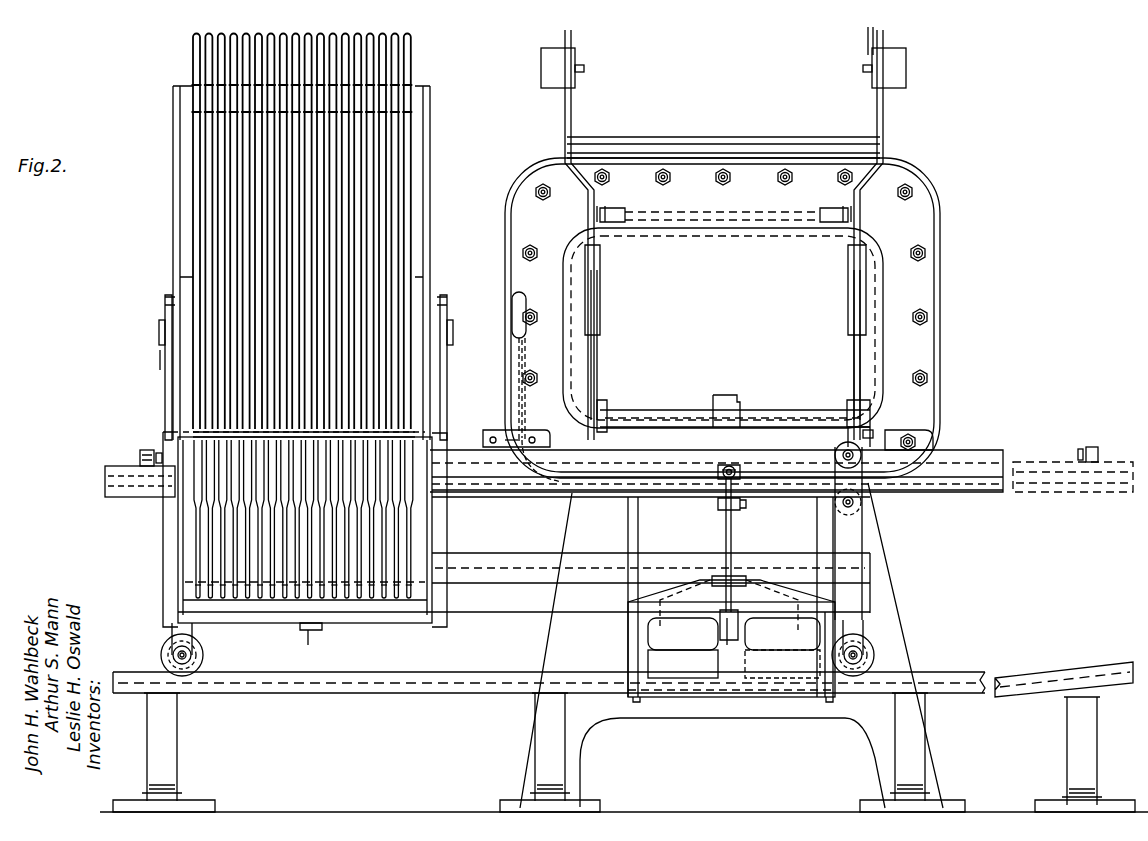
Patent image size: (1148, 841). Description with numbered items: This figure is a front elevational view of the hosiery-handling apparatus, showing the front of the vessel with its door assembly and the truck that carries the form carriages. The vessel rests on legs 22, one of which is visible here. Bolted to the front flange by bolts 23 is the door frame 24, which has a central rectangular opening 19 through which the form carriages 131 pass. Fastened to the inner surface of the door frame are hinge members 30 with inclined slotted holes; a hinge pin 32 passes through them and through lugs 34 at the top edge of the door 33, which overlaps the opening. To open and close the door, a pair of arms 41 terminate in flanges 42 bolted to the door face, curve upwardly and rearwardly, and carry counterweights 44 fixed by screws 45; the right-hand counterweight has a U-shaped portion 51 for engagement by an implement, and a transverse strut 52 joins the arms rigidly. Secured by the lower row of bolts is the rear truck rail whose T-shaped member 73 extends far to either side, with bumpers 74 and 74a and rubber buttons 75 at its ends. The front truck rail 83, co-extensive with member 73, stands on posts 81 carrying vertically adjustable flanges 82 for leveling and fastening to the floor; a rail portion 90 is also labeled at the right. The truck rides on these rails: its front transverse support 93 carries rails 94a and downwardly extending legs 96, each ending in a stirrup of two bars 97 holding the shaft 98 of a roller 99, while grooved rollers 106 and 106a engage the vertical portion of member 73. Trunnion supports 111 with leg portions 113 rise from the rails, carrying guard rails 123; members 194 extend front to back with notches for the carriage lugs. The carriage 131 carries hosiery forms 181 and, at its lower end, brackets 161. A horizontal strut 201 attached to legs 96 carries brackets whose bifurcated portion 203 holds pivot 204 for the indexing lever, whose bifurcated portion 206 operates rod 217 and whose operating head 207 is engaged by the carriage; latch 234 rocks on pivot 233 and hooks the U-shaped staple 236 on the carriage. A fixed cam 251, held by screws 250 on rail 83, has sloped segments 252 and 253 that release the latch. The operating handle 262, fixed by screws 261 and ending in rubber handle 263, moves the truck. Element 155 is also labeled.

The hosiery form 181 is at (194, 50).
The form carriage 131 is at (458, 152).
The bracket 161 is at (436, 542).
The leg 96 is at (170, 540).
The leg portion 113 is at (168, 384).
The clamp 155 is at (162, 306).
The guard rail 123 is at (159, 330).
The trunnion support 111 is at (158, 361).
The rubber handle 263 is at (512, 332).
The operating handle 262 is at (518, 393).
The T-shaped member 73 is at (125, 496).
The bumper 74 is at (141, 450).
The rubber button 75 is at (157, 453).
The bumper 74a is at (1091, 447).
The front transverse support 93 is at (491, 496).
The door frame 24 is at (940, 270).
The rectangular opening 19 is at (717, 247).
The door 33 is at (734, 329).
The bolt 23 is at (730, 183).
The transverse strut 52 is at (688, 137).
The arm 41 is at (574, 103).
The counterweight 44 is at (540, 68).
The screw 45 is at (586, 72).
The U-shaped portion 51 is at (867, 43).
The hinge pin 32 is at (685, 212).
The lug 34 is at (628, 210).
The hinge member 30 is at (604, 208).
The flange 42 is at (602, 298).
The member 194 is at (737, 402).
The rail 94a is at (606, 404).
The grooved roller 106a is at (872, 432).
The screw 261 is at (546, 446).
The grooved roller 106 is at (864, 515).
The leg 22 is at (872, 560).
The horizontal strut 201 is at (503, 561).
The front truck rail 83 is at (371, 698).
The rail 90 is at (135, 672).
The post 81 is at (180, 750).
The vertically adjustable flange 82 is at (210, 803).
The roller 99 is at (210, 650).
The shaft 98 is at (182, 655).
The bar 97 is at (182, 638).
The U-shaped staple 236 is at (323, 630).
The latch 234 is at (315, 644).
The operating head 207 is at (728, 568).
The bifurcated portion 206 is at (720, 465).
The rod 217 is at (738, 464).
The pivot 204 is at (718, 502).
The bifurcated portion 203 is at (742, 506).
The cam segment 252 is at (665, 578).
The cam segment 253 is at (796, 578).
The screw 250 is at (740, 698).
The pivot 233 is at (720, 627).
The fixed cam 251 is at (712, 658).